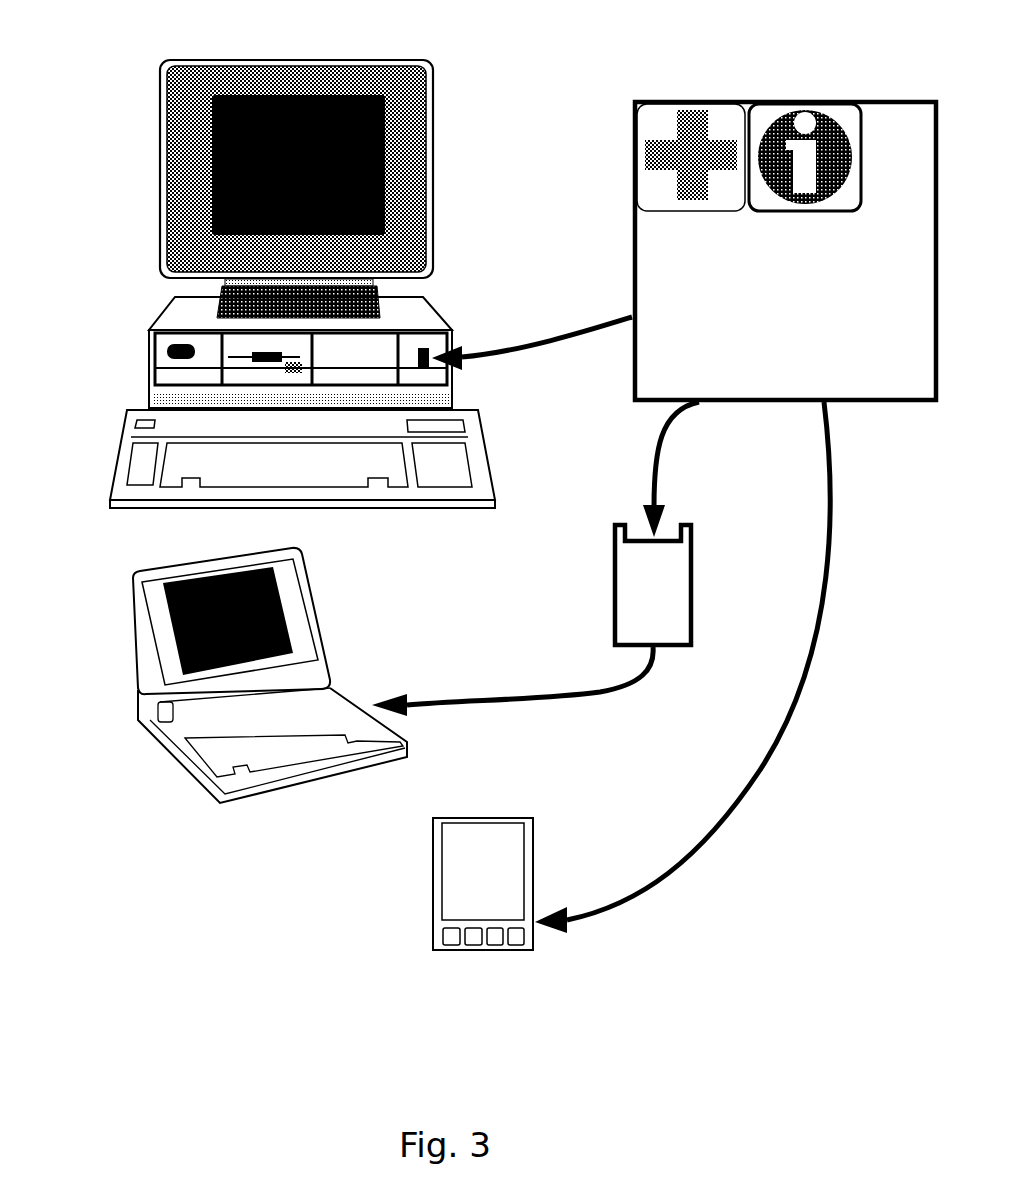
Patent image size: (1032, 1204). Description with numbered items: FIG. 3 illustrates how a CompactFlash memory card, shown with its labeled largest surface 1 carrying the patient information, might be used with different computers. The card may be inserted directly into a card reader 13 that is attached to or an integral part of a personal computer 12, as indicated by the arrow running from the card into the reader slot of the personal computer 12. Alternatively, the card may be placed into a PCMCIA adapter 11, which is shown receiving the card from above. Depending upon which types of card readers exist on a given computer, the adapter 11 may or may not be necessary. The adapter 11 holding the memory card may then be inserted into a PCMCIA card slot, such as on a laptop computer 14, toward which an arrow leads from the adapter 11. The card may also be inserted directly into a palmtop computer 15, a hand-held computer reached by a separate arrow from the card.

The largest surface of memory card 1 is at (890, 120).
The PCMCIA adapter 11 is at (635, 603).
The personal computer 12 is at (190, 322).
The card reader 13 is at (429, 348).
The laptop computer 14 is at (283, 742).
The palmtop computer 15 is at (463, 893).